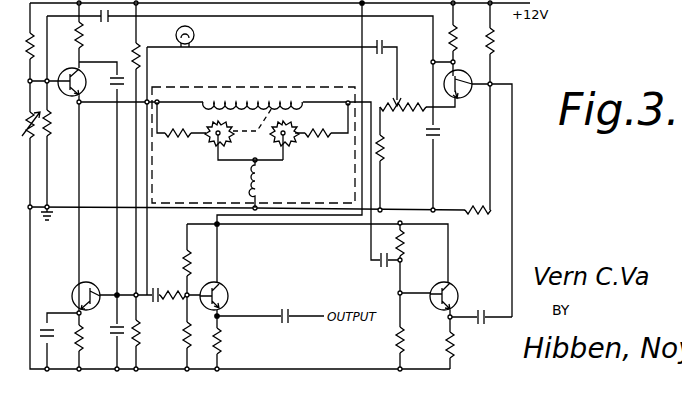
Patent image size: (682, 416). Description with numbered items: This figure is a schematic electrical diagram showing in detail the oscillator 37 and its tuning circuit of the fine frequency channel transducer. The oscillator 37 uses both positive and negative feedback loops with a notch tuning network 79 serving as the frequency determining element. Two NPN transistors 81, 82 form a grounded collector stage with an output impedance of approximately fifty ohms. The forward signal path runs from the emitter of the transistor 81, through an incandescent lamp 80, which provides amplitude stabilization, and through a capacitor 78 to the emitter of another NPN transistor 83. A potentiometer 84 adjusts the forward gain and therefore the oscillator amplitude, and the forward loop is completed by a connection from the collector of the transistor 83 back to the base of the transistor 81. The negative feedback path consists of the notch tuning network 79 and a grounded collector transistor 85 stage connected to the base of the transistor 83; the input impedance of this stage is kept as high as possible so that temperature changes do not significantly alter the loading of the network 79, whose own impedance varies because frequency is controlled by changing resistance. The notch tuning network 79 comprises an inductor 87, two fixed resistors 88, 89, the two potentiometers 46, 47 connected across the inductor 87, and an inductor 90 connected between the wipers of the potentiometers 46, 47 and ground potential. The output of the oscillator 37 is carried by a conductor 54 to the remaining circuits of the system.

The oscillator 37 is at (523, 65).
The potentiometer 46 is at (212, 152).
The potentiometer 47 is at (291, 146).
The conductor 54 is at (301, 312).
The capacitor 78 is at (386, 47).
The notch tuning network 79 is at (238, 87).
The incandescent lamp 80 is at (195, 32).
The NPN transistor 81 is at (65, 95).
The NPN transistor 82 is at (74, 284).
The NPN transistor 83 is at (464, 99).
The potentiometer 84 is at (398, 110).
The grounded collector transistor 85 is at (452, 284).
The inductor 87 is at (278, 101).
The fixed resistor 88 is at (168, 140).
The fixed resistor 89 is at (321, 140).
The inductor 90 is at (260, 188).